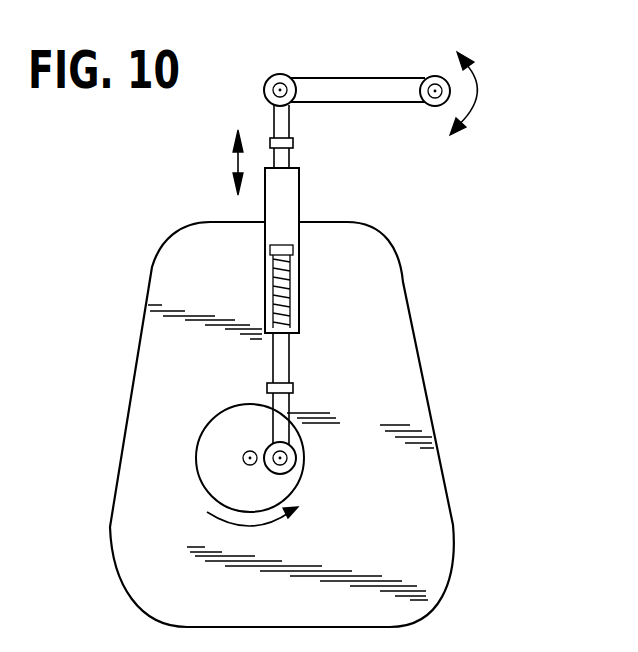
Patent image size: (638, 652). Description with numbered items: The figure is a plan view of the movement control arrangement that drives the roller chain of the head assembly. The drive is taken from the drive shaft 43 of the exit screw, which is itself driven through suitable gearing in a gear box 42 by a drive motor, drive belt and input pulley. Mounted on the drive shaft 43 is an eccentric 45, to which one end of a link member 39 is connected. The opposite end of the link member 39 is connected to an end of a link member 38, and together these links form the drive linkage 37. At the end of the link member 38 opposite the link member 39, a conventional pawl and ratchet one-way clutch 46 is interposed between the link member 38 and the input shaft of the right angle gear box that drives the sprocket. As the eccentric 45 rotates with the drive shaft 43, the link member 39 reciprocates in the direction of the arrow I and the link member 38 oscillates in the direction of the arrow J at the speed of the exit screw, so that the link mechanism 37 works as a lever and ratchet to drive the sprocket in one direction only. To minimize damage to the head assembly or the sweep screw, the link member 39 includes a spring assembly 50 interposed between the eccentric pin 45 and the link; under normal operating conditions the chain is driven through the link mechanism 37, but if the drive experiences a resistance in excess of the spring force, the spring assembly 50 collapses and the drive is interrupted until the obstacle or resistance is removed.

The drive linkage 37 is at (423, 63).
The link member 38 is at (328, 78).
The link member 39 is at (290, 125).
The gear box 42 is at (120, 453).
The drive shaft 43 is at (205, 485).
The eccentric 45 is at (298, 450).
The pawl and ratchet one-way clutch 46 is at (451, 97).
The spring assembly 50 is at (299, 310).
The arrow I is at (235, 165).
The arrow J is at (478, 77).